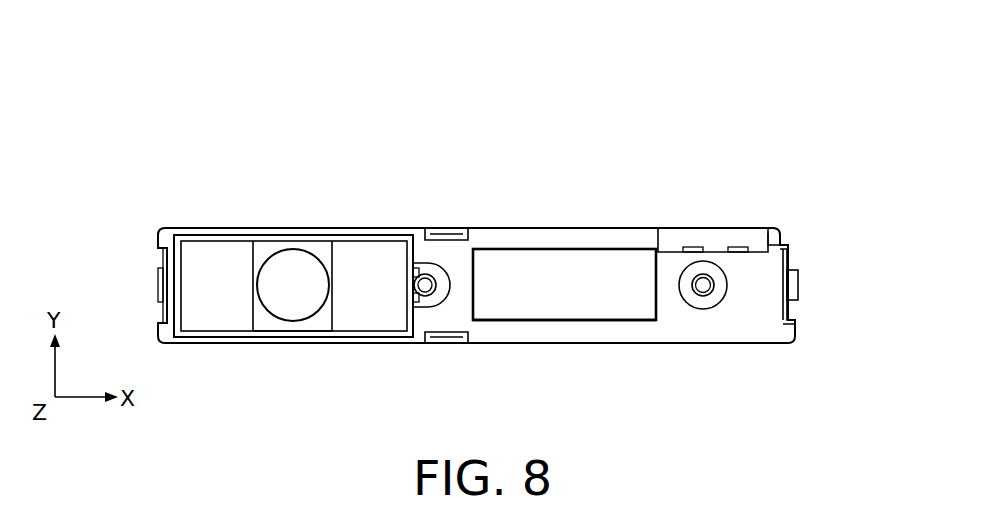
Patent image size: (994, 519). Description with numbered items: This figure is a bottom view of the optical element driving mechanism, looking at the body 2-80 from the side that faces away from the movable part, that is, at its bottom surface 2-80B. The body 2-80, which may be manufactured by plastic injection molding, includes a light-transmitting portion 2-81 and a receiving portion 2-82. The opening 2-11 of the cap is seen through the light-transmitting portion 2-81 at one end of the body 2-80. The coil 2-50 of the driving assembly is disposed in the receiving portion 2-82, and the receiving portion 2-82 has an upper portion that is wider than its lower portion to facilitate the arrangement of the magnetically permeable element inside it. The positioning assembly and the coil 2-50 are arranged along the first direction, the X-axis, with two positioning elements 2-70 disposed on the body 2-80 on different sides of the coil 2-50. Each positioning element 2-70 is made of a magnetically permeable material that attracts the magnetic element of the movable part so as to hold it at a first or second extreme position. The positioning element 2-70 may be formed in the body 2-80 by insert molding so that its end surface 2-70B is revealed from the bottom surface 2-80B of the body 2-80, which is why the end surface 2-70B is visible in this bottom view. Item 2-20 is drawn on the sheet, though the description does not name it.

The opening 2-11 is at (293, 268).
The frame / holder 2-20 is at (372, 264).
The coil 2-50 is at (563, 262).
The positioning element 2-70 is at (708, 280).
The end surface 2-70B is at (428, 282).
The body 2-80 is at (770, 262).
The bottom surface 2-80B is at (770, 292).
The light-transmitting portion 2-81 is at (270, 332).
The receiving portion 2-82 is at (563, 332).